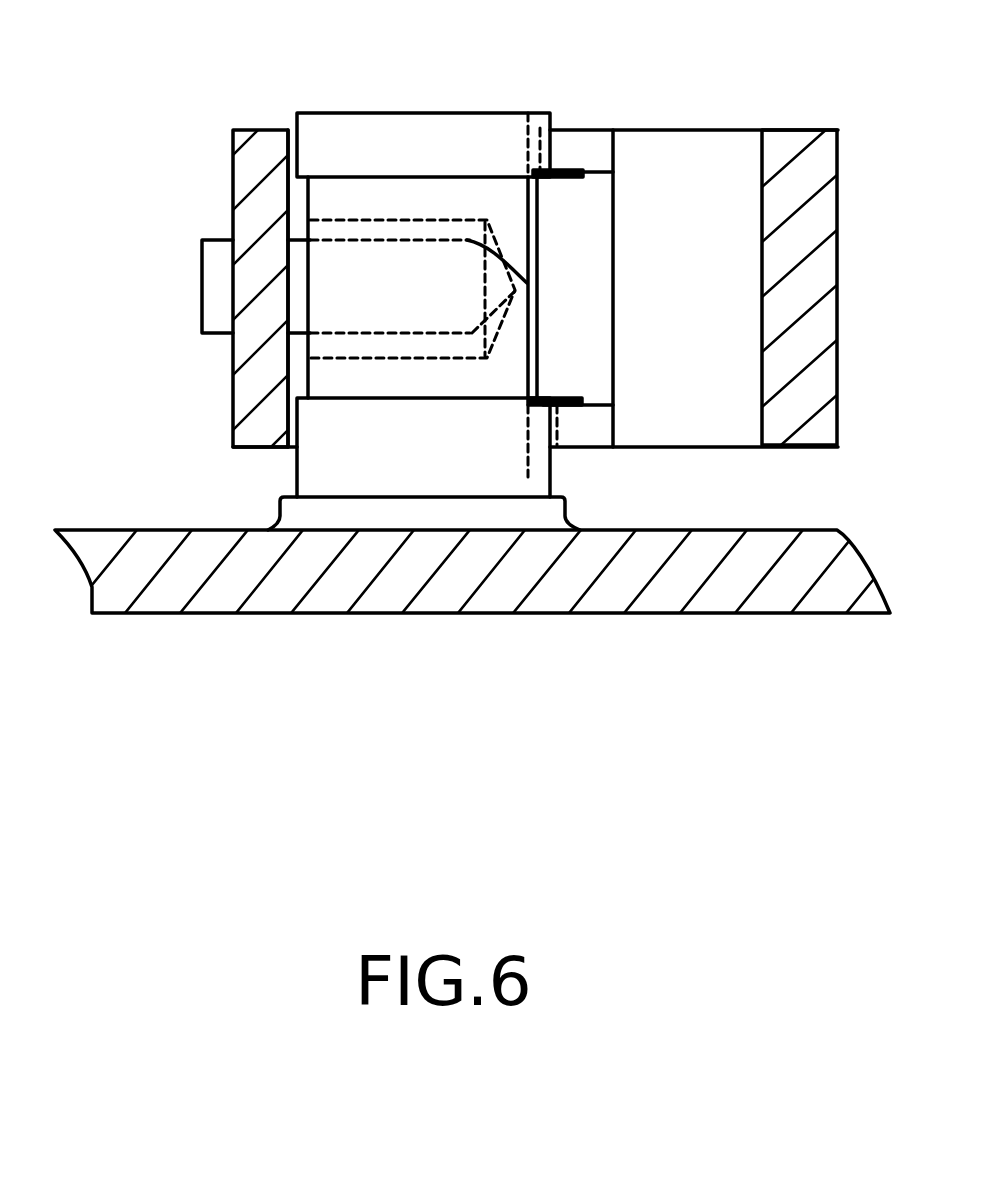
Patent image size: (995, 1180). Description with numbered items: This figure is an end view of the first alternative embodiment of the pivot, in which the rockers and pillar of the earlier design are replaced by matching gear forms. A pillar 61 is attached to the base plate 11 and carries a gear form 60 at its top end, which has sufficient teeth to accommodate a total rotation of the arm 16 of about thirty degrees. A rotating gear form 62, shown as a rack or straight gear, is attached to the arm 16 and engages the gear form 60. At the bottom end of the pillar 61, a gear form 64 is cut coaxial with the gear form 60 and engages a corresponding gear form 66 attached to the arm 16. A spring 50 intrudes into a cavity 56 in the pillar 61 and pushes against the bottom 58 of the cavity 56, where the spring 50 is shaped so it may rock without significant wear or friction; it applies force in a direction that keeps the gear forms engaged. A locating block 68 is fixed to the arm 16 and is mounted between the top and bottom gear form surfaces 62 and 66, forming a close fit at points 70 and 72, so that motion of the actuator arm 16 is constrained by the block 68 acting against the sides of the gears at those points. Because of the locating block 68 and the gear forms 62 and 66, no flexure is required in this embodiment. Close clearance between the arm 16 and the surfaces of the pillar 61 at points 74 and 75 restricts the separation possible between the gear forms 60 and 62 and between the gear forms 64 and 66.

The base plate 11 is at (278, 598).
The arm 16 is at (265, 143).
The spring 50 is at (215, 292).
The cavity 56 is at (408, 357).
The bottom of cavity 58 is at (517, 290).
The gear form 60 is at (530, 133).
The pillar 61 is at (405, 123).
The rotating gear form 62 is at (563, 150).
The gear form 64 is at (538, 460).
The gear form 66 is at (567, 427).
The locating block 68 is at (587, 283).
The point 70 is at (540, 178).
The point 72 is at (545, 398).
The point 74 is at (288, 155).
The point 75 is at (267, 447).